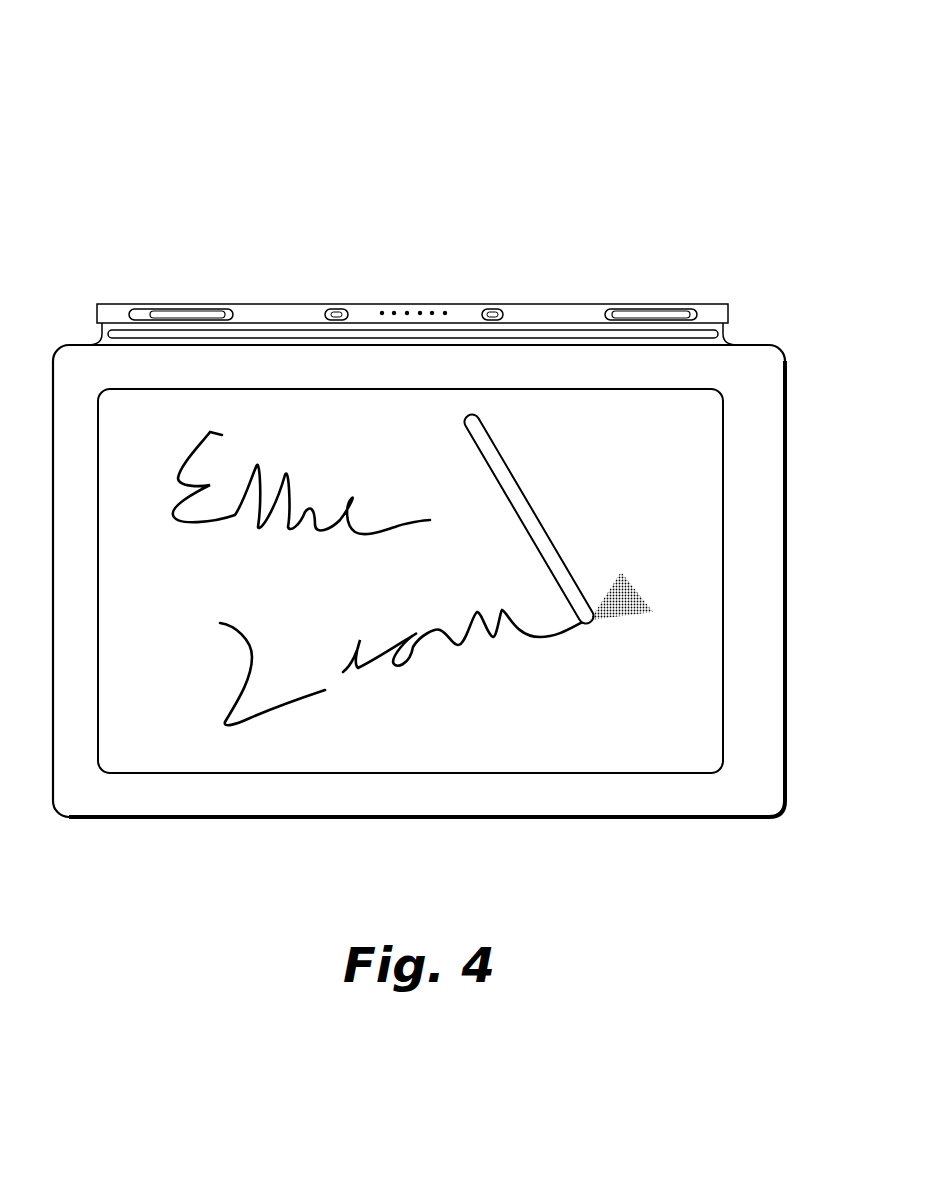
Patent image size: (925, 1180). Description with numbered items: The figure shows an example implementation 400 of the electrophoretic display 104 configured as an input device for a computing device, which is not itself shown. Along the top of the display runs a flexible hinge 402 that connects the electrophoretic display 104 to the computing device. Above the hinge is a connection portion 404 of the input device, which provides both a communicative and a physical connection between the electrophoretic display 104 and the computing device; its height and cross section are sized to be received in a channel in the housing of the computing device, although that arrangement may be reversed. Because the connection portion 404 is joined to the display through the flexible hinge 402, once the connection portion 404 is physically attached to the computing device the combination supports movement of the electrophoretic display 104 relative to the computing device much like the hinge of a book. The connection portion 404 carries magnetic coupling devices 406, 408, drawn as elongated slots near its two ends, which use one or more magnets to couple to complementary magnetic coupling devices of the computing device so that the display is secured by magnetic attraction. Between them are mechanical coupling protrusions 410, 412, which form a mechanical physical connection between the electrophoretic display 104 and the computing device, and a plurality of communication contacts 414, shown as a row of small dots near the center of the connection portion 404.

The example implementation 400 is at (124, 66).
The flexible hinge 402 is at (742, 320).
The connection portion 404 is at (118, 313).
The magnetic coupling device 406 is at (180, 315).
The magnetic coupling device 408 is at (647, 315).
The mechanical coupling protrusion 410 is at (337, 311).
The mechanical coupling protrusion 412 is at (492, 311).
The communication contacts 414 is at (417, 279).
The electrophoretic display 104 is at (115, 801).